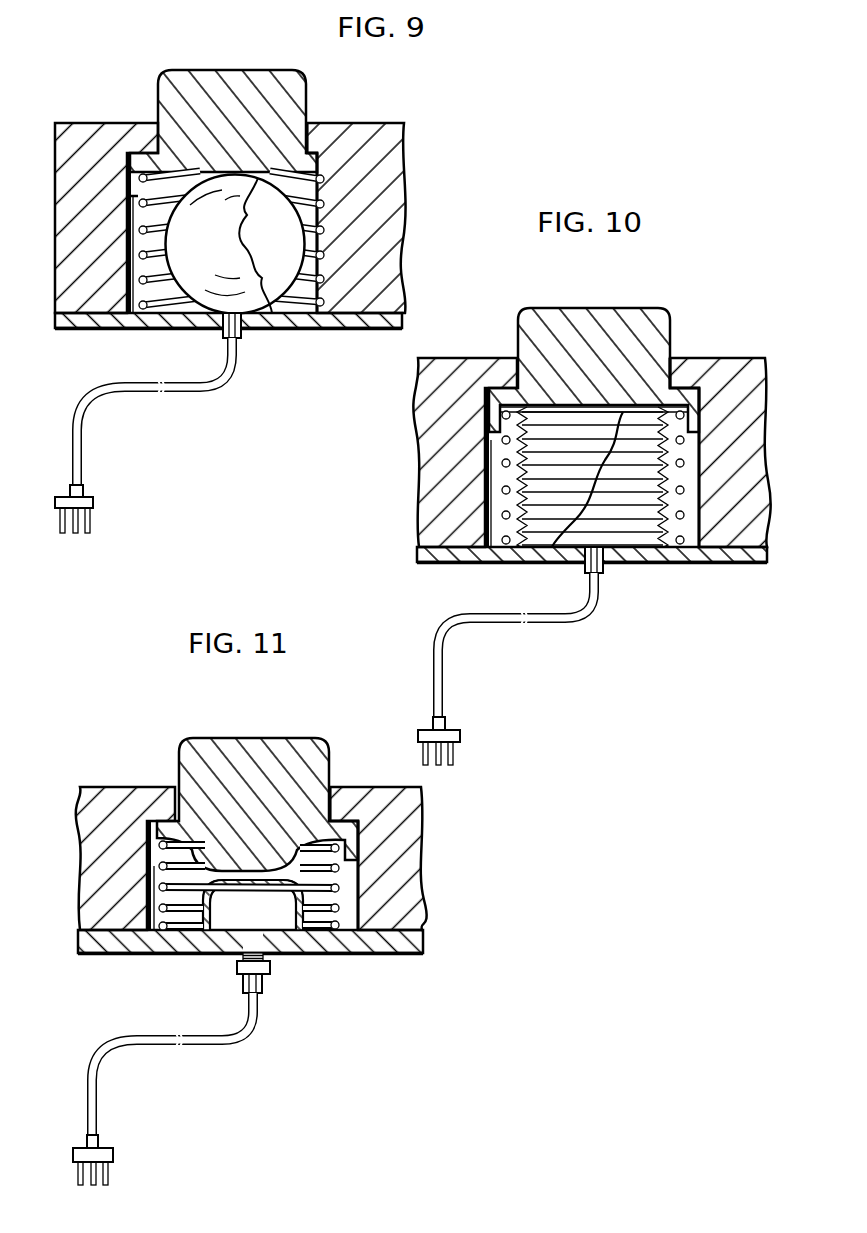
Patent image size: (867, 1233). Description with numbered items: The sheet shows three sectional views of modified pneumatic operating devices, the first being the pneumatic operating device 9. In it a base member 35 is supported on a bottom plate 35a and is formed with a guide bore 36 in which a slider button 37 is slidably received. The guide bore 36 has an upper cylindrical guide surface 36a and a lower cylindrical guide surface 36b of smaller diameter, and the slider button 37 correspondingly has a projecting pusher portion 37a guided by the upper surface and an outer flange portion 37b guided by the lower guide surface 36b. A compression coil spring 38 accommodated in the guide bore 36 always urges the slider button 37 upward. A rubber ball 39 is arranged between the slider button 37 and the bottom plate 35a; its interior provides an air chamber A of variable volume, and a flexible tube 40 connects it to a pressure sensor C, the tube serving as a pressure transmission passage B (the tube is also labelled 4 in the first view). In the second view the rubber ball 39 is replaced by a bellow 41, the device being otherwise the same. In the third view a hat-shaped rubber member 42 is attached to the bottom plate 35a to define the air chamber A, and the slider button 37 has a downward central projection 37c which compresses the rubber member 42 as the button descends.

In FIG. 9, the pneumatic operating device 9 is at (176, 272).
In FIG. 10, the pneumatic operating device 9 is at (562, 504).
In FIG. 11, the pneumatic operating device 9 is at (259, 929).
In FIG. 9, the base member 35 is at (123, 123).
In FIG. 10, the base member 35 is at (447, 367).
In FIG. 11, the base member 35 is at (107, 787).
In FIG. 9, the bottom plate 35a is at (87, 320).
In FIG. 10, the bottom plate 35a is at (440, 553).
In FIG. 11, the bottom plate 35a is at (182, 942).
In FIG. 9, the guide bore 36 is at (397, 50).
In FIG. 10, the guide bore 36 is at (757, 258).
In FIG. 11, the guide bore 36 is at (510, 833).
In FIG. 9, the upper cylindrical guide surface 36a is at (295, 130).
In FIG. 10, the upper cylindrical guide surface 36a is at (665, 370).
In FIG. 11, the upper cylindrical guide surface 36a is at (322, 802).
In FIG. 9, the lower cylindrical guide surface 36b is at (333, 157).
In FIG. 10, the lower cylindrical guide surface 36b is at (690, 392).
In FIG. 11, the lower cylindrical guide surface 36b is at (352, 830).
In FIG. 9, the slider button 37 is at (263, 70).
In FIG. 10, the slider button 37 is at (630, 308).
In FIG. 11, the slider button 37 is at (302, 738).
In FIG. 9, the projecting pusher portion 37a is at (213, 103).
In FIG. 10, the projecting pusher portion 37a is at (590, 325).
In FIG. 11, the projecting pusher portion 37a is at (270, 762).
In FIG. 9, the outer flange portion 37b is at (130, 157).
In FIG. 10, the outer flange portion 37b is at (500, 397).
In FIG. 11, the outer flange portion 37b is at (163, 827).
In FIG. 11, the downward central projection 37c is at (248, 865).
In FIG. 9, the compression coil spring 38 is at (140, 230).
In FIG. 10, the compression coil spring 38 is at (505, 467).
In FIG. 11, the compression coil spring 38 is at (163, 883).
In FIG. 9, the rubber ball 39 is at (197, 280).
In FIG. 9, the cable 4 is at (188, 393).
In FIG. 10, the flexible tube 40 is at (555, 628).
In FIG. 11, the flexible tube 40 is at (218, 1047).
In FIG. 10, the bellow 41 is at (688, 475).
In FIG. 11, the hat-shaped rubber member 42 is at (300, 897).
In FIG. 9, the air chamber A is at (278, 275).
In FIG. 10, the air chamber A is at (633, 527).
In FIG. 11, the air chamber A is at (278, 913).
In FIG. 9, the pressure transmission passage B is at (227, 377).
In FIG. 10, the pressure transmission passage B is at (492, 628).
In FIG. 11, the pressure transmission passage B is at (145, 1048).
In FIG. 9, the pressure sensor C is at (95, 507).
In FIG. 10, the pressure sensor C is at (460, 738).
In FIG. 11, the pressure sensor C is at (113, 1155).